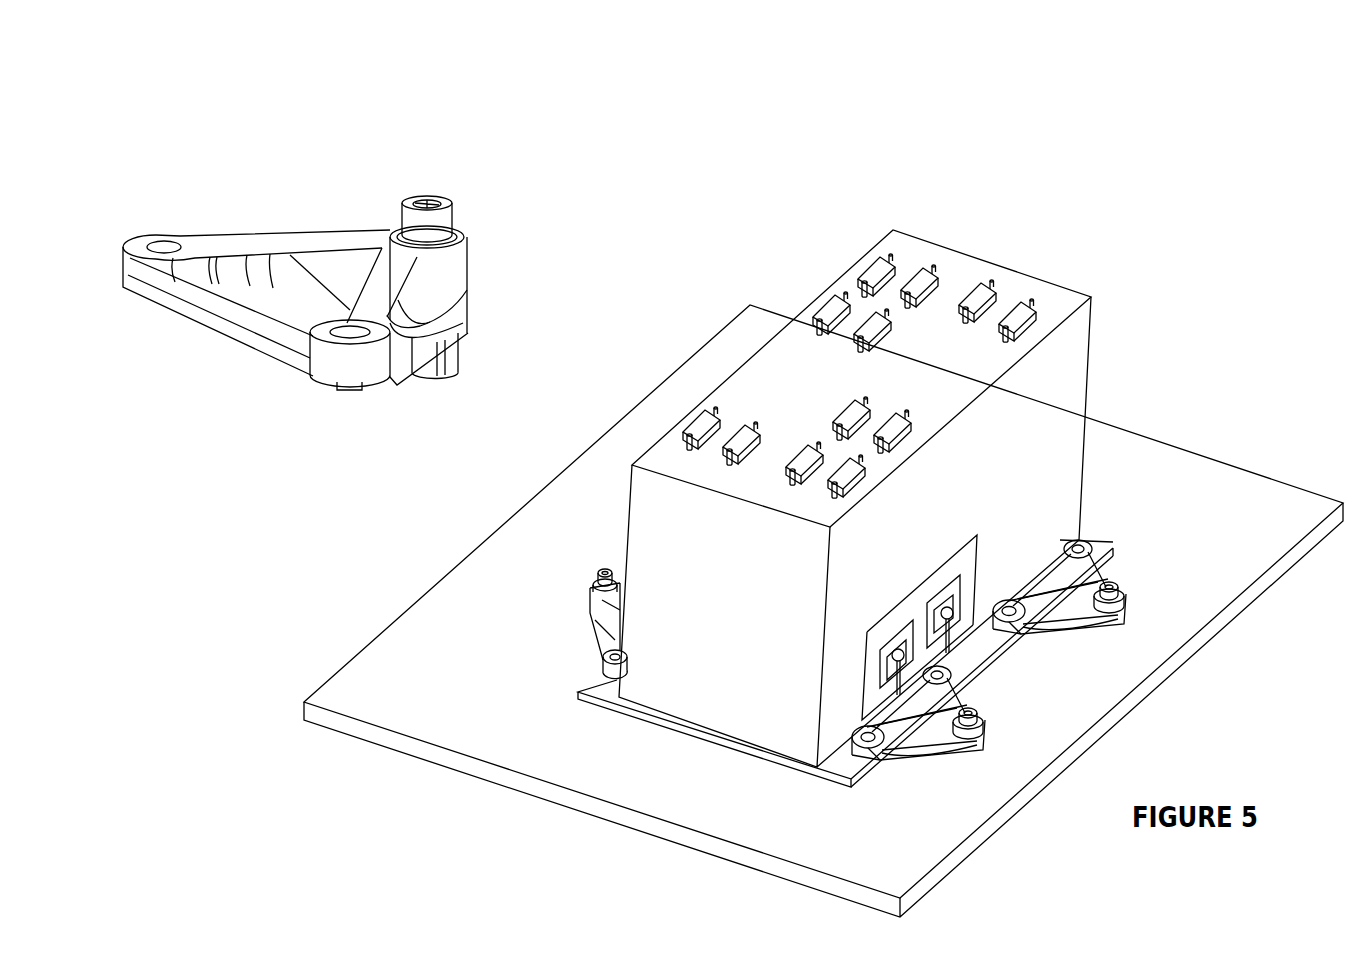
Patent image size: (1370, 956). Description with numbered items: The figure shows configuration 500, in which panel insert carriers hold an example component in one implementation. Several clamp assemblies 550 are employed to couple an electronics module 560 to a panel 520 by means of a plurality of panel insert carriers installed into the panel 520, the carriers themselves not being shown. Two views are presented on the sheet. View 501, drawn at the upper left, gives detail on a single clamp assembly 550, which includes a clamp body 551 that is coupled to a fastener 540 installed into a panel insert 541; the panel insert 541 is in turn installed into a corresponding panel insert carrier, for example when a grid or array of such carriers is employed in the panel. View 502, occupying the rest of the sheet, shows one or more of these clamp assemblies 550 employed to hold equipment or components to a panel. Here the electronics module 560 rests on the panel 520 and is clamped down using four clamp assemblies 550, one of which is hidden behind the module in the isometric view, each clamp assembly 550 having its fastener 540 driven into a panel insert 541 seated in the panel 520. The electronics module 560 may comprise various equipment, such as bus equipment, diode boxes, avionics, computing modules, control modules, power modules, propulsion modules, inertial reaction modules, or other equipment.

The configuration 500 is at (145, 48).
The view 501 is at (240, 173).
The view 502 is at (762, 238).
The panel 520 is at (1242, 520).
The fastener 540 is at (458, 213).
The panel insert 541 is at (462, 352).
The clamp assembly 550 is at (477, 268).
The clamp body 551 is at (225, 334).
The electronics module 560 is at (1092, 347).